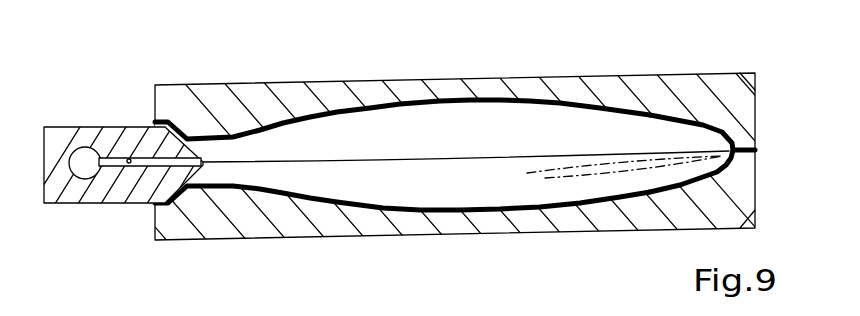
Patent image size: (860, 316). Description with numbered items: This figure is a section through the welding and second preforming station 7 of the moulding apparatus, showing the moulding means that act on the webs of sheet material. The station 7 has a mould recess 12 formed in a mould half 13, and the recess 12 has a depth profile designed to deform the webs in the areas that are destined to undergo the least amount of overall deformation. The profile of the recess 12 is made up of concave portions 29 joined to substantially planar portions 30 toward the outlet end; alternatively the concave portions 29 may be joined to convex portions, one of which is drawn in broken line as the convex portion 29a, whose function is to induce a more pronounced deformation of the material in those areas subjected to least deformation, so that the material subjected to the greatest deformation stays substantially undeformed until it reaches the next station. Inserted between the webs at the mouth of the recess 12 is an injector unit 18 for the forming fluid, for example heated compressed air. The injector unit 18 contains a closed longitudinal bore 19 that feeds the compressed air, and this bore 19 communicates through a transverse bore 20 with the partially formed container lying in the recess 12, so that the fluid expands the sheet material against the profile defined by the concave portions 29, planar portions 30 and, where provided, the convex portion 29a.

The intermediate station 7 is at (343, 246).
The mould recess 12 is at (541, 86).
The mould half 13 is at (728, 88).
The injector unit 18 is at (99, 104).
The closed longitudinal bore 19 is at (82, 160).
The transverse bore 20 is at (129, 158).
The concave portion 29 is at (446, 104).
The convex portion 29a is at (540, 174).
The substantially planar portion 30 is at (668, 115).